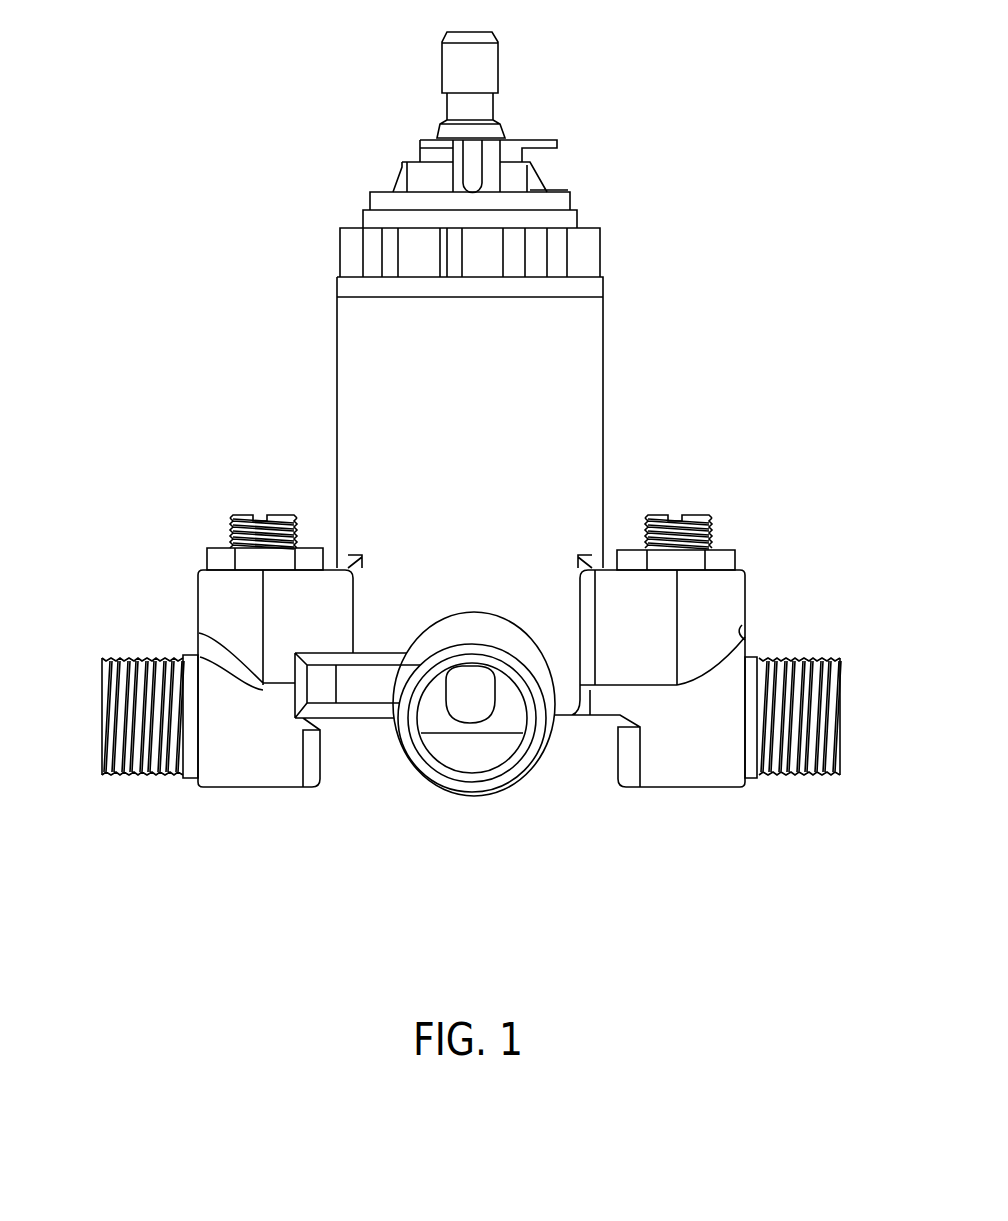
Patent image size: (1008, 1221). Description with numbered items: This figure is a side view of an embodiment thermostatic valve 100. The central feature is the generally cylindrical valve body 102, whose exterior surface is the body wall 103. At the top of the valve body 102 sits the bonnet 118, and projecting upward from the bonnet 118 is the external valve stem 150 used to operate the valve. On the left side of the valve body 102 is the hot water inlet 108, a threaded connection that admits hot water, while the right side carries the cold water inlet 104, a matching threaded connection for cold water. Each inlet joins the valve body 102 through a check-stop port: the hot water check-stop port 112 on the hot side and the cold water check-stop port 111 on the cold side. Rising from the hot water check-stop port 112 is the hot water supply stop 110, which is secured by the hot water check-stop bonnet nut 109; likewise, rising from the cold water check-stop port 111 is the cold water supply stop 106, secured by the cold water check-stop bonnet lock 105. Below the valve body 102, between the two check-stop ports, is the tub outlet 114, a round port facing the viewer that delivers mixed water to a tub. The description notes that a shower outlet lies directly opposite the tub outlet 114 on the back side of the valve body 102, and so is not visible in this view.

The thermostatic valve 100 is at (732, 932).
The valve body 102 is at (578, 370).
The body wall 103 is at (362, 418).
The cold water inlet 104 is at (842, 710).
The cold water check-stop bonnet lock 105 is at (722, 558).
The cold water supply stop 106 is at (712, 514).
The hot water inlet 108 is at (102, 708).
The hot water check-stop bonnet nut 109 is at (218, 560).
The hot water supply stop 110 is at (242, 514).
The cold water check-stop port 111 is at (720, 616).
The hot water check-stop port 112 is at (225, 623).
The tub outlet 114 is at (478, 745).
The bonnet 118 is at (510, 182).
The external valve stem 150 is at (500, 52).